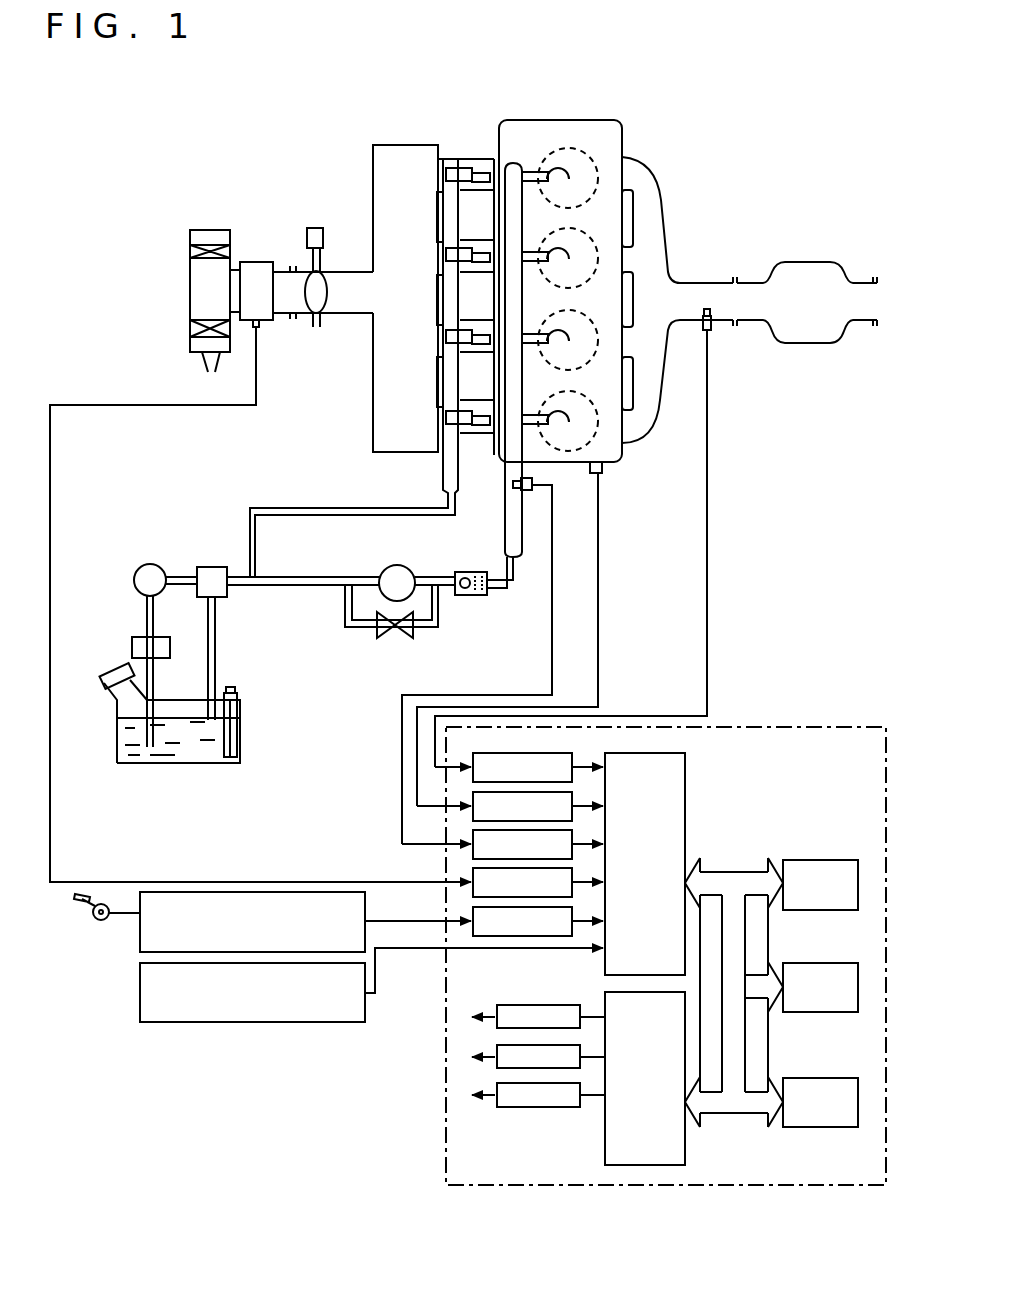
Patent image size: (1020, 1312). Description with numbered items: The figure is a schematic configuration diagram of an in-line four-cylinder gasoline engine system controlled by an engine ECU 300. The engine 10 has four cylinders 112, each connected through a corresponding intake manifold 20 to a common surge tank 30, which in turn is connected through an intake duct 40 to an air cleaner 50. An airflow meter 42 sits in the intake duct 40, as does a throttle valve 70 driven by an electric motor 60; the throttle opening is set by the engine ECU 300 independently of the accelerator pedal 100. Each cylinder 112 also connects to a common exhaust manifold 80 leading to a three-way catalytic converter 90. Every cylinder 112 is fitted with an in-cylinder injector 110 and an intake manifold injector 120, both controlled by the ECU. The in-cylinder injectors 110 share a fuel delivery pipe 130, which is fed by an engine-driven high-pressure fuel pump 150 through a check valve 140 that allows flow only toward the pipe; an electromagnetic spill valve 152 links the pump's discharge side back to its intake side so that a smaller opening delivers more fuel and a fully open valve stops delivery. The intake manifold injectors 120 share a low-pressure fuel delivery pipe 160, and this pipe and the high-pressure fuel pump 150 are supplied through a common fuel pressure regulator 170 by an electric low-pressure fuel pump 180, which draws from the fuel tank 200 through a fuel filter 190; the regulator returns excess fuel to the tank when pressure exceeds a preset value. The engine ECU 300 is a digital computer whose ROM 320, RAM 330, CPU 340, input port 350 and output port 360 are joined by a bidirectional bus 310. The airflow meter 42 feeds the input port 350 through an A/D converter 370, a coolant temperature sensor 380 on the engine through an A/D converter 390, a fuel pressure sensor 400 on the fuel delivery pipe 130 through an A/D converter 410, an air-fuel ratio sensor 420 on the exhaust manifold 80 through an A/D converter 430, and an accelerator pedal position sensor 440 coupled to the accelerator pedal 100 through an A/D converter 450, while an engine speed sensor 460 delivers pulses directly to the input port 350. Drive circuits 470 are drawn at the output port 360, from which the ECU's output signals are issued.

The engine 10 is at (625, 116).
The intake manifold 20 is at (458, 159).
The surge tank 30 is at (390, 145).
The intake duct 40 is at (346, 272).
The airflow meter 42 is at (257, 262).
The air cleaner 50 is at (190, 288).
The electric motor 60 is at (313, 228).
The throttle valve 70 is at (318, 292).
The exhaust manifold 80 is at (662, 192).
The three-way catalytic converter 90 is at (812, 262).
The accelerator pedal 100 is at (88, 918).
The in-cylinder injector 110 is at (568, 299).
The cylinder 112 is at (598, 142).
The intake manifold injector 120 is at (446, 174).
The fuel delivery pipe 130 is at (513, 163).
The check valve 140 is at (470, 597).
The high-pressure fuel pump 150 is at (384, 570).
The electromagnetic spill valve 152 is at (393, 640).
The fuel delivery pipe 160 is at (443, 478).
The fuel pressure regulator 170 is at (212, 567).
The low-pressure fuel pump 180 is at (150, 564).
The fuel filter 190 is at (134, 637).
The fuel tank 200 is at (180, 763).
The engine ECU 300 is at (832, 724).
The bidirectional bus 310 is at (730, 872).
The ROM 320 is at (812, 860).
The RAM 330 is at (812, 963).
The CPU 340 is at (812, 1078).
The input port 350 is at (685, 780).
The output port 360 is at (685, 1147).
The A/D converter 370 is at (440, 882).
The coolant temperature sensor 380 is at (602, 478).
The A/D converter 390 is at (430, 806).
The fuel pressure sensor 400 is at (533, 492).
The A/D converter 410 is at (430, 844).
The air-fuel ratio sensor 420 is at (712, 333).
The A/D converter 430 is at (435, 767).
The accelerator pedal position sensor 440 is at (140, 930).
The A/D converter 450 is at (460, 921).
The engine speed sensor 460 is at (140, 995).
The drive circuit 470 is at (480, 1018).